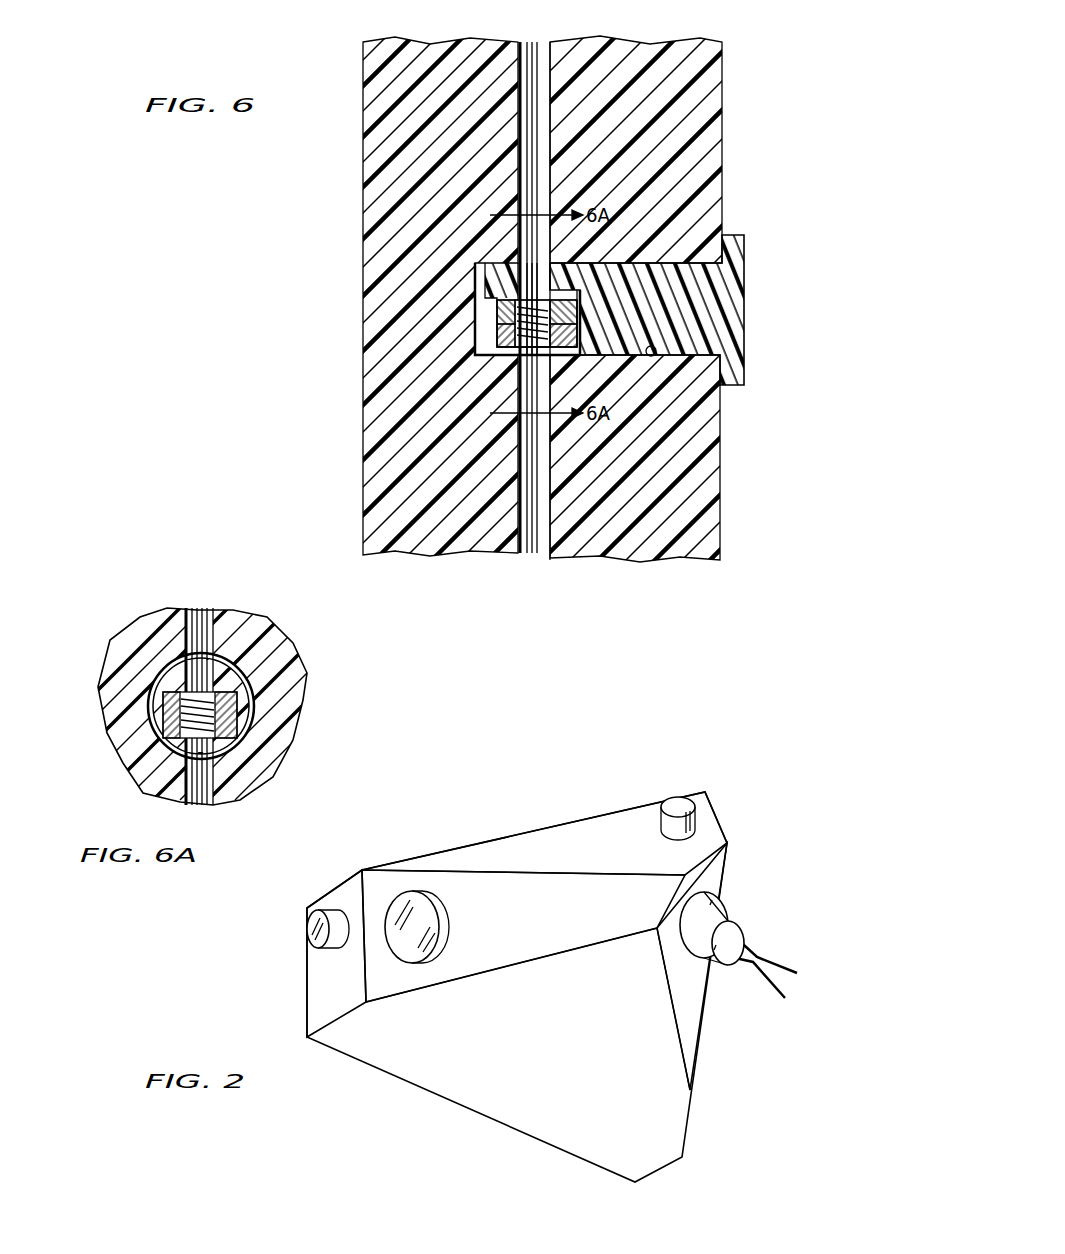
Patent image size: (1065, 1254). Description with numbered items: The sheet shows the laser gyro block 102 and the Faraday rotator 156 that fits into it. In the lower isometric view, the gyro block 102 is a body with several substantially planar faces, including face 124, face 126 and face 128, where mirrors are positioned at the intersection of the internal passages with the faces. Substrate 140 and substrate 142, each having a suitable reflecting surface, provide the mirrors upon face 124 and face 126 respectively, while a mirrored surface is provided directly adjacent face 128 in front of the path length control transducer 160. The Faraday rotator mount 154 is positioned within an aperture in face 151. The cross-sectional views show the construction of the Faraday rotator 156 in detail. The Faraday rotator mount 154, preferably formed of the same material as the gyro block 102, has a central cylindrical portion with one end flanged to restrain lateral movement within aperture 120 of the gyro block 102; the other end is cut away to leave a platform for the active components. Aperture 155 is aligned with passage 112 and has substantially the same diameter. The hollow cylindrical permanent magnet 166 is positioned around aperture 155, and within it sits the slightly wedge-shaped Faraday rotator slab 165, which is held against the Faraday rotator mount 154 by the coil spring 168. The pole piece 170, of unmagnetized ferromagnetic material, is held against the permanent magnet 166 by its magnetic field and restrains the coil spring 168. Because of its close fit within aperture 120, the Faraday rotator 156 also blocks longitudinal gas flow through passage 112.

In FIG. 6, the gyro block 102 is at (725, 65).
In FIG. 2, the gyro block 102 is at (668, 1108).
In FIG. 6, the passage 112 is at (538, 530).
In FIG. 6, the aperture 120 is at (656, 355).
In FIG. 2, the face 124 is at (348, 888).
In FIG. 2, the face 126 is at (563, 842).
In FIG. 2, the face 128 is at (693, 1018).
In FIG. 2, the substrate 140 is at (318, 952).
In FIG. 2, the substrate 142 is at (688, 822).
In FIG. 2, the face 151 is at (462, 885).
In FIG. 6, the Faraday rotator mount 154 is at (700, 327).
In FIG. 2, the Faraday rotator mount 154 is at (413, 953).
In FIG. 6, the aperture 155 is at (536, 274).
In FIG. 6, the Faraday rotator 156 is at (510, 355).
In FIG. 2, the path length control transducer 160 is at (718, 905).
In FIG. 6, the Faraday rotator slab 165 is at (556, 280).
In FIG. 6A, the Faraday rotator slab 165 is at (207, 700).
In FIG. 6, the permanent magnet 166 is at (480, 300).
In FIG. 6A, the permanent magnet 166 is at (165, 700).
In FIG. 6, the coil spring 168 is at (500, 312).
In FIG. 6A, the coil spring 168 is at (235, 705).
In FIG. 6, the pole piece 170 is at (490, 352).
In FIG. 6A, the pole piece 170 is at (170, 730).